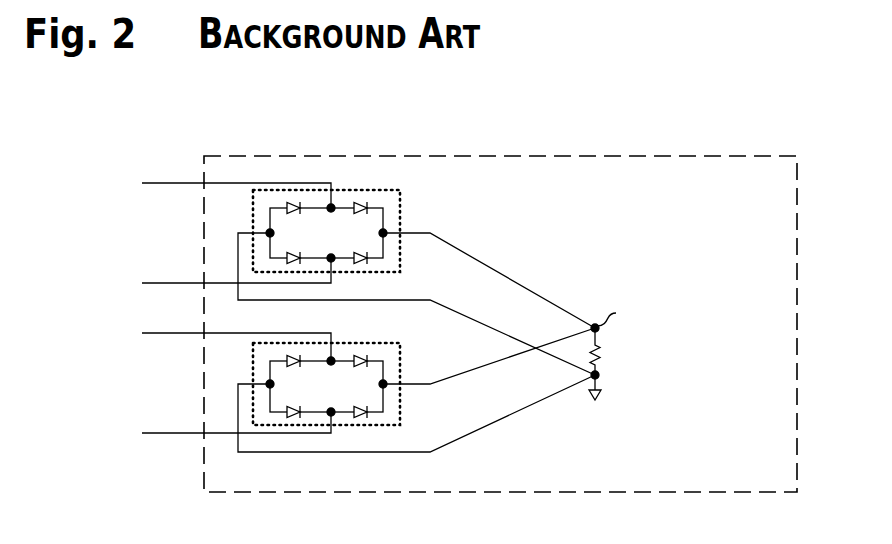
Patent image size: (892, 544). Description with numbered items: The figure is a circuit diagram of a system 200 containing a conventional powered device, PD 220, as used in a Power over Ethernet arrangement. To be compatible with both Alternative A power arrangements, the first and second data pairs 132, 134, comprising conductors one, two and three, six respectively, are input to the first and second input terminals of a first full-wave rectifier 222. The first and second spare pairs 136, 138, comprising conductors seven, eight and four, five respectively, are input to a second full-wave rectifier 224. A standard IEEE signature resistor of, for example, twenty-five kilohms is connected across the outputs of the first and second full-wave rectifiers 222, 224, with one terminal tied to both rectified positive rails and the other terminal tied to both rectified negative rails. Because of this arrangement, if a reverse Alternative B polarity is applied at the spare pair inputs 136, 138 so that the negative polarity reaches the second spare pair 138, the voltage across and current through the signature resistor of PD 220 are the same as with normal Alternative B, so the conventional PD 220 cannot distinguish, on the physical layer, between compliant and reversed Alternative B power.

The system 200 is at (590, 148).
The conventional PD 220 is at (381, 156).
The first full-wave rectifier 222 is at (400, 190).
The second full-wave rectifier 224 is at (400, 343).
The first data pair 132 is at (142, 188).
The second data pair 134 is at (142, 288).
The first spare pair 136 is at (142, 338).
The second spare pair 138 is at (142, 438).